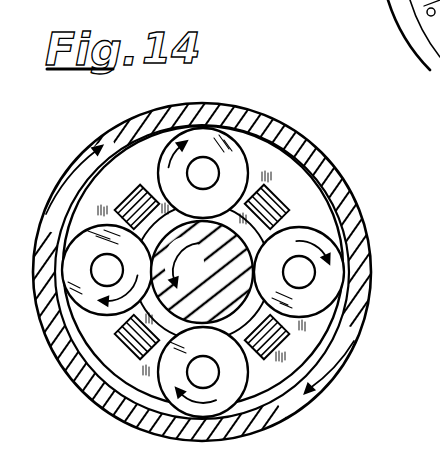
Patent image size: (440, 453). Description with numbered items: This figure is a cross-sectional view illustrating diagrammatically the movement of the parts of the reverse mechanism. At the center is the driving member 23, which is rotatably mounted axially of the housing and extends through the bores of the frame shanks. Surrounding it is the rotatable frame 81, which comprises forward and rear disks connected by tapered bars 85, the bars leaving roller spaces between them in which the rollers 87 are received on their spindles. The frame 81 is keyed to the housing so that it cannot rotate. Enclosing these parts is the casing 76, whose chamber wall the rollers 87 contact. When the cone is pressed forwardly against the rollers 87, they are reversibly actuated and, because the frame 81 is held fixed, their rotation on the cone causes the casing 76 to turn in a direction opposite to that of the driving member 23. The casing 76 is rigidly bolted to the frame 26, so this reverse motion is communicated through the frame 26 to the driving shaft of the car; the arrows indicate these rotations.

The casing 76 is at (313, 158).
The rollers 87 is at (240, 370).
The rotatable frame 81 is at (293, 211).
The tapered bars 85 is at (120, 203).
The rotatable frame 26 is at (274, 152).
The driving member 23 is at (164, 261).